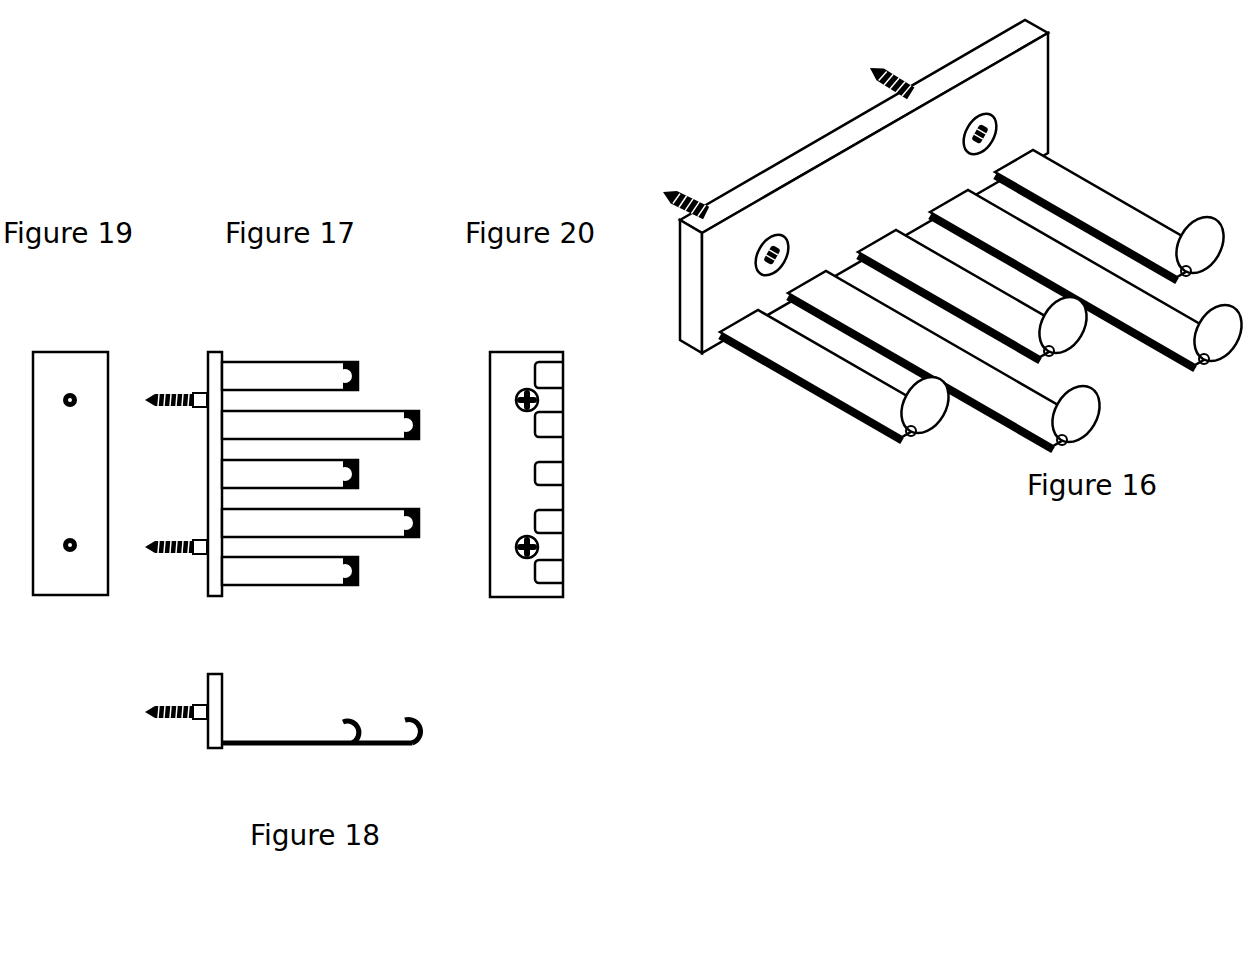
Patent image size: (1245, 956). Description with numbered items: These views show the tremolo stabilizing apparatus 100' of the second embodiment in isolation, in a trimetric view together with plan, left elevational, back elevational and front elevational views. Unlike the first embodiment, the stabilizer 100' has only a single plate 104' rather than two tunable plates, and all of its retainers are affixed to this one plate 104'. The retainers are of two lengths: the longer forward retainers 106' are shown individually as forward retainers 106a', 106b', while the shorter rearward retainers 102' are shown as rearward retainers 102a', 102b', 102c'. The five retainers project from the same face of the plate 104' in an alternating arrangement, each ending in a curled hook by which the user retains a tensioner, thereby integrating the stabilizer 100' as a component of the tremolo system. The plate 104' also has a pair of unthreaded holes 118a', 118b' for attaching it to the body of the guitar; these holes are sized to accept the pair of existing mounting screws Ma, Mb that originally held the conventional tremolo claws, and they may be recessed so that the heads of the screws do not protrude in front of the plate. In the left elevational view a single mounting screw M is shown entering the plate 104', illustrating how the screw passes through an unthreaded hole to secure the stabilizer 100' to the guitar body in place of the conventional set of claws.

In FIG. 16, the tremolo stabilizing apparatus 100' is at (712, 82).
In FIG. 16, the plate 104' is at (868, 186).
In FIG. 19, the plate 104' is at (136, 493).
In FIG. 17, the plate 104' is at (248, 500).
In FIG. 20, the plate 104' is at (421, 493).
In FIG. 18, the plate 104' is at (233, 698).
In FIG. 16, the rearward retainer 102a' is at (839, 375).
In FIG. 17, the rearward retainer 102a' is at (290, 571).
In FIG. 20, the rearward retainer 102a' is at (603, 558).
In FIG. 16, the rearward retainer 102b' is at (977, 295).
In FIG. 17, the rearward retainer 102b' is at (290, 474).
In FIG. 20, the rearward retainer 102b' is at (603, 459).
In FIG. 16, the rearward retainer 102c' is at (1114, 215).
In FIG. 17, the rearward retainer 102c' is at (290, 376).
In FIG. 20, the rearward retainer 102c' is at (602, 359).
In FIG. 16, the forward retainer 106a' is at (948, 360).
In FIG. 17, the forward retainer 106a' is at (320, 523).
In FIG. 20, the forward retainer 106a' is at (632, 507).
In FIG. 16, the forward retainer 106b' is at (1087, 279).
In FIG. 17, the forward retainer 106b' is at (320, 425).
In FIG. 20, the forward retainer 106b' is at (632, 409).
In FIG. 18, the rearward retainer 102' is at (323, 705).
In FIG. 18, the forward retainer 106' is at (461, 705).
In FIG. 16, the unthreaded hole 118a' is at (802, 237).
In FIG. 19, the unthreaded hole 118a' is at (130, 520).
In FIG. 17, the unthreaded hole 118a' is at (196, 519).
In FIG. 16, the unthreaded hole 118b' is at (946, 136).
In FIG. 19, the unthreaded hole 118b' is at (133, 423).
In FIG. 17, the unthreaded hole 118b' is at (199, 425).
In FIG. 16, the mounting screw Ma is at (668, 188).
In FIG. 19, the mounting screw Ma is at (74, 549).
In FIG. 17, the mounting screw Ma is at (170, 556).
In FIG. 20, the mounting screw Ma is at (516, 551).
In FIG. 16, the mounting screw Mb is at (868, 70).
In FIG. 19, the mounting screw Mb is at (74, 397).
In FIG. 17, the mounting screw Mb is at (174, 388).
In FIG. 20, the mounting screw Mb is at (516, 396).
In FIG. 18, the mounting screw M is at (145, 706).